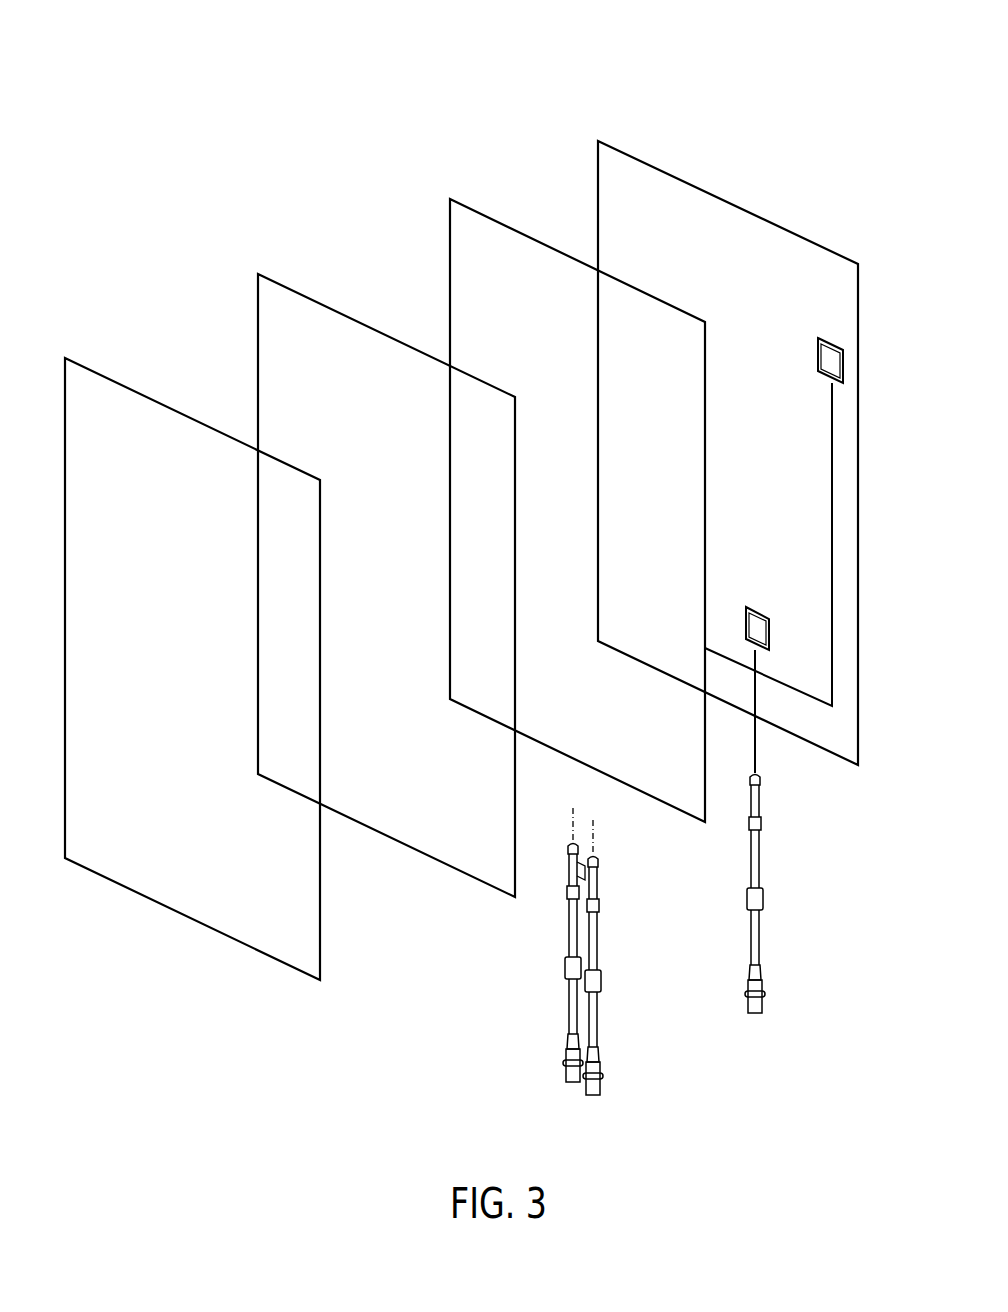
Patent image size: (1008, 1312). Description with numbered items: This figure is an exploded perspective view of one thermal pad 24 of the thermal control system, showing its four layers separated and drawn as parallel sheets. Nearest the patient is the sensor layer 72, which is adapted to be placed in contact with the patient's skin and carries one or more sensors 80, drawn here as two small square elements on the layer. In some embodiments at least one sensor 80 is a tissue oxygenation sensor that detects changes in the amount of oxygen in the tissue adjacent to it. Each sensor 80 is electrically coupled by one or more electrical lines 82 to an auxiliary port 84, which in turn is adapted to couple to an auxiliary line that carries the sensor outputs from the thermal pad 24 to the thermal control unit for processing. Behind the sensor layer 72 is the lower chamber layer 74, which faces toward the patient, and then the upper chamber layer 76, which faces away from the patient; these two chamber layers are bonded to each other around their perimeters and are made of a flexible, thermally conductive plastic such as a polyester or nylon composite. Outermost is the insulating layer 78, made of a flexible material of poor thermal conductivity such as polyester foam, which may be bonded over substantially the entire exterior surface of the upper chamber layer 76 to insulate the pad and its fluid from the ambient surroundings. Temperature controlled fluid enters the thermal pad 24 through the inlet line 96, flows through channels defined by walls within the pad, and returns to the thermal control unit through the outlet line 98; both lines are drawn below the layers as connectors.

The thermal pad 24 is at (527, 72).
The sensor layer 72 is at (672, 176).
The lower chamber layer 74 is at (505, 224).
The upper chamber layer 76 is at (322, 305).
The insulating layer 78 is at (108, 376).
The sensor 80 is at (818, 346).
The electrical line 82 is at (787, 681).
The auxiliary port 84 is at (762, 1004).
The inlet line 96 is at (598, 1018).
The outlet line 98 is at (569, 1013).